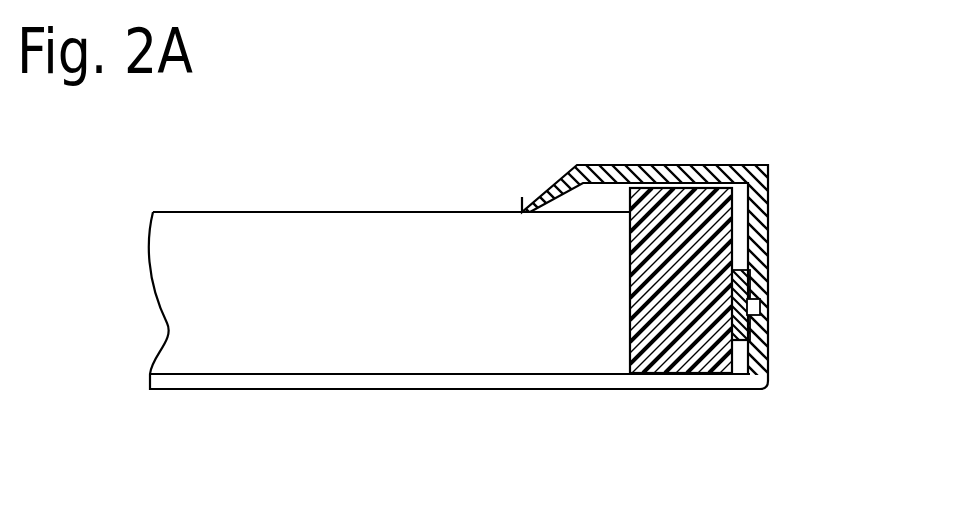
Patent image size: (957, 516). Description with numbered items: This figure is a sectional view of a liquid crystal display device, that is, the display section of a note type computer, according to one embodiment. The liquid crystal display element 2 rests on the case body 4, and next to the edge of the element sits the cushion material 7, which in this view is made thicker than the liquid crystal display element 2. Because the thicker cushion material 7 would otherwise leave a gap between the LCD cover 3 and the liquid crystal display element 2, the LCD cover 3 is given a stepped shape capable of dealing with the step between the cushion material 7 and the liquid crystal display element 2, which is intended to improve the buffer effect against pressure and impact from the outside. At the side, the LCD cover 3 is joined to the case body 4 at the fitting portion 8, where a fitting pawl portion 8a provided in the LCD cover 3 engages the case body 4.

The liquid crystal display element 2 is at (372, 262).
The LCD cover 3 is at (768, 172).
The case body 4 is at (518, 384).
The cushion material 7 is at (685, 357).
The fitting portion 8 is at (760, 310).
The fitting pawl portion 8a is at (765, 340).